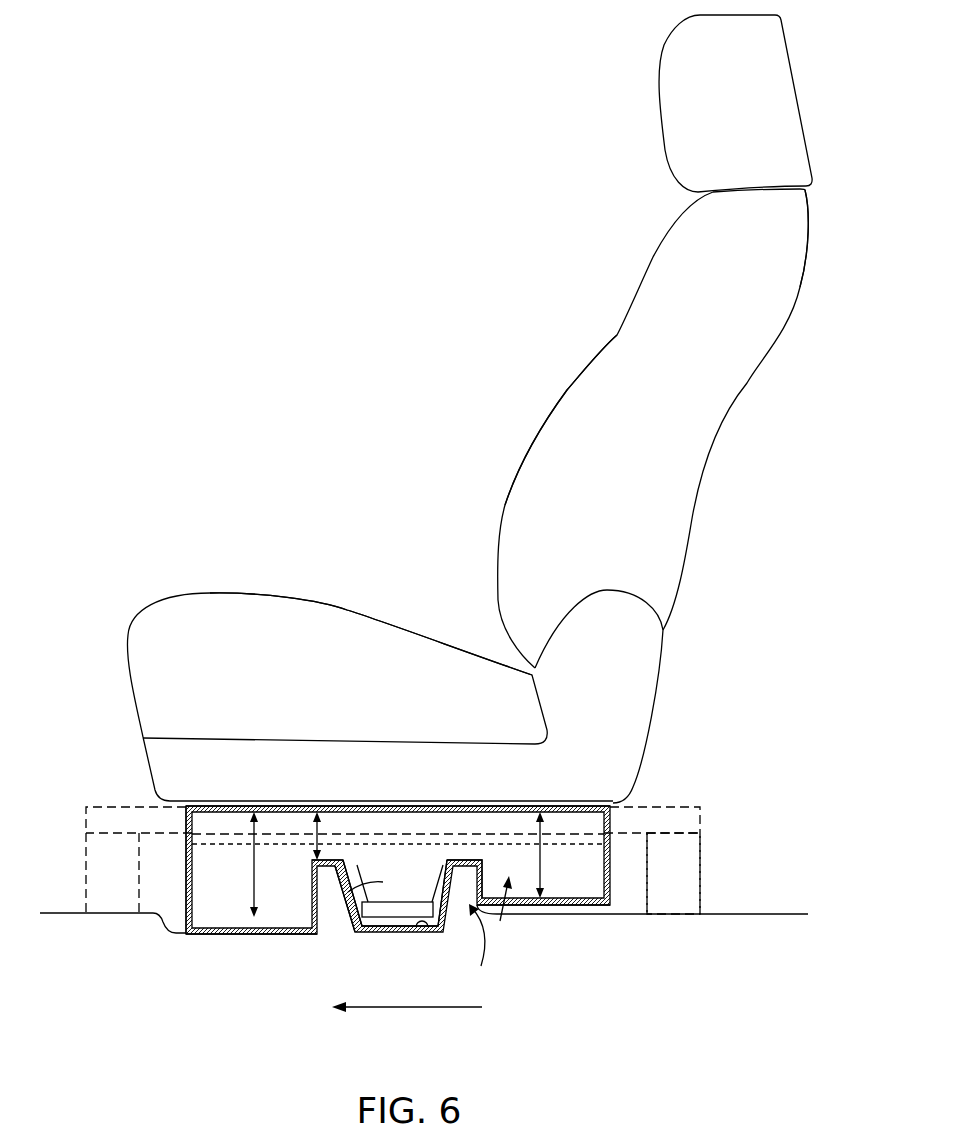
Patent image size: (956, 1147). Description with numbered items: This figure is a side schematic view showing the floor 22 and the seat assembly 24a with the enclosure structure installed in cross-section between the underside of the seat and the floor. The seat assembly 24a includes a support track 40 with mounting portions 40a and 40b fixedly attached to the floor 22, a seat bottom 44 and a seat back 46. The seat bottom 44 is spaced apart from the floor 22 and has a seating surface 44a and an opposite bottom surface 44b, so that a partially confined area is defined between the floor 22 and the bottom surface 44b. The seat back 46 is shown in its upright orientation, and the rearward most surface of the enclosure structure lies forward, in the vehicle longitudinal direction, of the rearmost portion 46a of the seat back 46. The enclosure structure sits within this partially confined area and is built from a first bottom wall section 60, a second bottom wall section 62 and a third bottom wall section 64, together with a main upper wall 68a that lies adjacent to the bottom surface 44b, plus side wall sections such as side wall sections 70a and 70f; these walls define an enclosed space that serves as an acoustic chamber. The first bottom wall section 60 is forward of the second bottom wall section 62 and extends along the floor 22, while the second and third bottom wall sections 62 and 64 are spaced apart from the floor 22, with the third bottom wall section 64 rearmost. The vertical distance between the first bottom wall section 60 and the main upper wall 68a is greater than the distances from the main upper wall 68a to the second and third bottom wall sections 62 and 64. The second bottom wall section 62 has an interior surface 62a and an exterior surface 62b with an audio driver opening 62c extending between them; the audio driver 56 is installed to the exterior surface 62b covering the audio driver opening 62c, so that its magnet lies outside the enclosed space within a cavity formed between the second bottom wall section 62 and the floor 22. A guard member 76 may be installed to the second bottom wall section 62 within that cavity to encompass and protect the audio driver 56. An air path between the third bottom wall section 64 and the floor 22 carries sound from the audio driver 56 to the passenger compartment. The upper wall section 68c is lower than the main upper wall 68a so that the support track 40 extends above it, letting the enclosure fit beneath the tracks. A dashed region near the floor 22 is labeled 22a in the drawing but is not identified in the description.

The floor 22 is at (53, 912).
The floor portion 22a is at (424, 926).
The seat assembly 24a is at (561, 384).
The support track 40 is at (663, 800).
The mounting portion 40a is at (107, 853).
The mounting portion 40b is at (675, 858).
The seat bottom 44 is at (232, 628).
The seating surface 44a is at (345, 608).
The bottom surface 44b is at (205, 801).
The seat back 46 is at (697, 280).
The rearmost portion 46a is at (807, 257).
The audio driver 56 is at (397, 910).
The first bottom wall section 60 is at (215, 934).
The second bottom wall section 62 is at (460, 870).
The interior surface 62a is at (480, 860).
The exterior surface 62b is at (327, 910).
The audio driver opening 62c is at (382, 861).
The third bottom wall section 64 is at (573, 906).
The main upper wall 68a is at (287, 806).
The upper wall section 68c is at (334, 843).
The side wall section 70a is at (610, 880).
The side wall section 70f is at (185, 898).
The guard member 76 is at (378, 884).